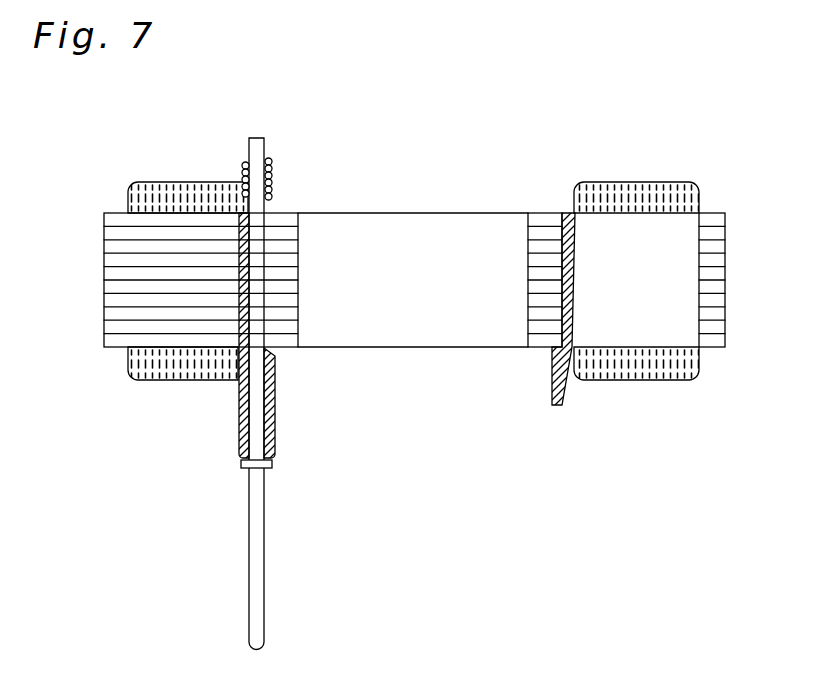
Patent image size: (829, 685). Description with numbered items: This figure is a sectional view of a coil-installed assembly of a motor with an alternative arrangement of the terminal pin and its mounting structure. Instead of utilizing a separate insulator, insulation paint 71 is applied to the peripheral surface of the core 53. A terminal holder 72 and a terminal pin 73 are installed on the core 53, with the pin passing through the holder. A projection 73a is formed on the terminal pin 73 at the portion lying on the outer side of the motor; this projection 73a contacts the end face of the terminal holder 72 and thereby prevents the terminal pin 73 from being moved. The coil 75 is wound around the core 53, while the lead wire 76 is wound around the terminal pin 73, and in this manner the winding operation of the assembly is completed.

The core 53 is at (543, 216).
The insulation paint 71 is at (717, 214).
The terminal holder 72 is at (238, 421).
The terminal pin 73 is at (255, 568).
The projection 73a is at (273, 464).
The coil 75 is at (187, 190).
The lead wire 76 is at (273, 170).